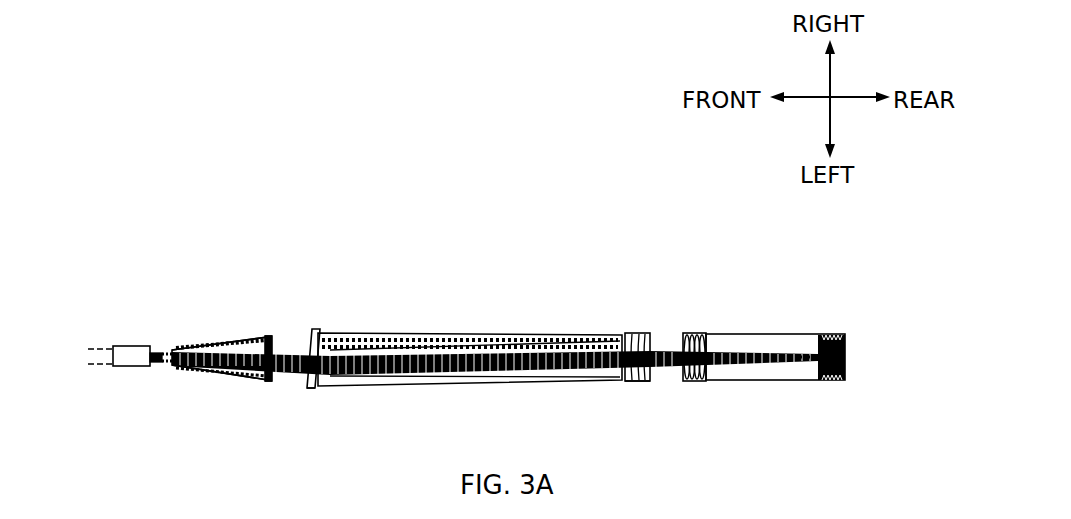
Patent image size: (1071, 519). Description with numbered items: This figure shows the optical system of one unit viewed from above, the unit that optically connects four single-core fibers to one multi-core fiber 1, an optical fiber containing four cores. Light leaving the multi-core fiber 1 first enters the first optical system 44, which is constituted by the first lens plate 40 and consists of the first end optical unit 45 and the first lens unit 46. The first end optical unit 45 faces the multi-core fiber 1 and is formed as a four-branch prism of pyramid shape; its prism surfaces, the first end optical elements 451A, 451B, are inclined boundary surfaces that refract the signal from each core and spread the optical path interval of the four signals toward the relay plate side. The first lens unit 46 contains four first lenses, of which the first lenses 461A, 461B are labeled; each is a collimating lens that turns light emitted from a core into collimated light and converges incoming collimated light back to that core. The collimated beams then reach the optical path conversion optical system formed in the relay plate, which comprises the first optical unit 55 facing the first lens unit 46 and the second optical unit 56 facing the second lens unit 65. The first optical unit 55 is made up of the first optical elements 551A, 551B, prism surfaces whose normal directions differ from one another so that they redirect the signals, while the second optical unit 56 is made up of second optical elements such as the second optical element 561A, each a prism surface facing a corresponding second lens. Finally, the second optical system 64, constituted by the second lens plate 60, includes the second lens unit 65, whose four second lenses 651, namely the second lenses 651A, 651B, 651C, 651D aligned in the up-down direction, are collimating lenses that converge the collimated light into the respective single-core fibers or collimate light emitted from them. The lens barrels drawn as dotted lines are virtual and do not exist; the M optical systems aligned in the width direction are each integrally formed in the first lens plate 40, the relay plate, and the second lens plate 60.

The multi-core fiber 1 is at (138, 347).
The first lens plate 40 is at (400, 321).
The first optical system 44 is at (648, 238).
The first end optical unit 45 is at (170, 314).
The first lens unit 46 is at (267, 314).
The first end optical element 451A is at (168, 374).
The first end optical element 451B is at (170, 346).
The first lens 461A is at (272, 382).
The first lens 461B is at (268, 336).
The first optical unit 55 is at (313, 314).
The second optical unit 56 is at (630, 314).
The first optical element 551A is at (311, 389).
The first optical element 551B is at (316, 330).
The second optical element 561A is at (650, 382).
The second lens plate 60 is at (785, 322).
The second optical system 64 is at (848, 238).
The second lens unit 65 is at (692, 314).
The second lens 651 is at (785, 392).
The second lens 651A is at (687, 380).
The second lens 651B is at (692, 380).
The second lens 651C is at (697, 380).
The second lens 651D is at (702, 380).